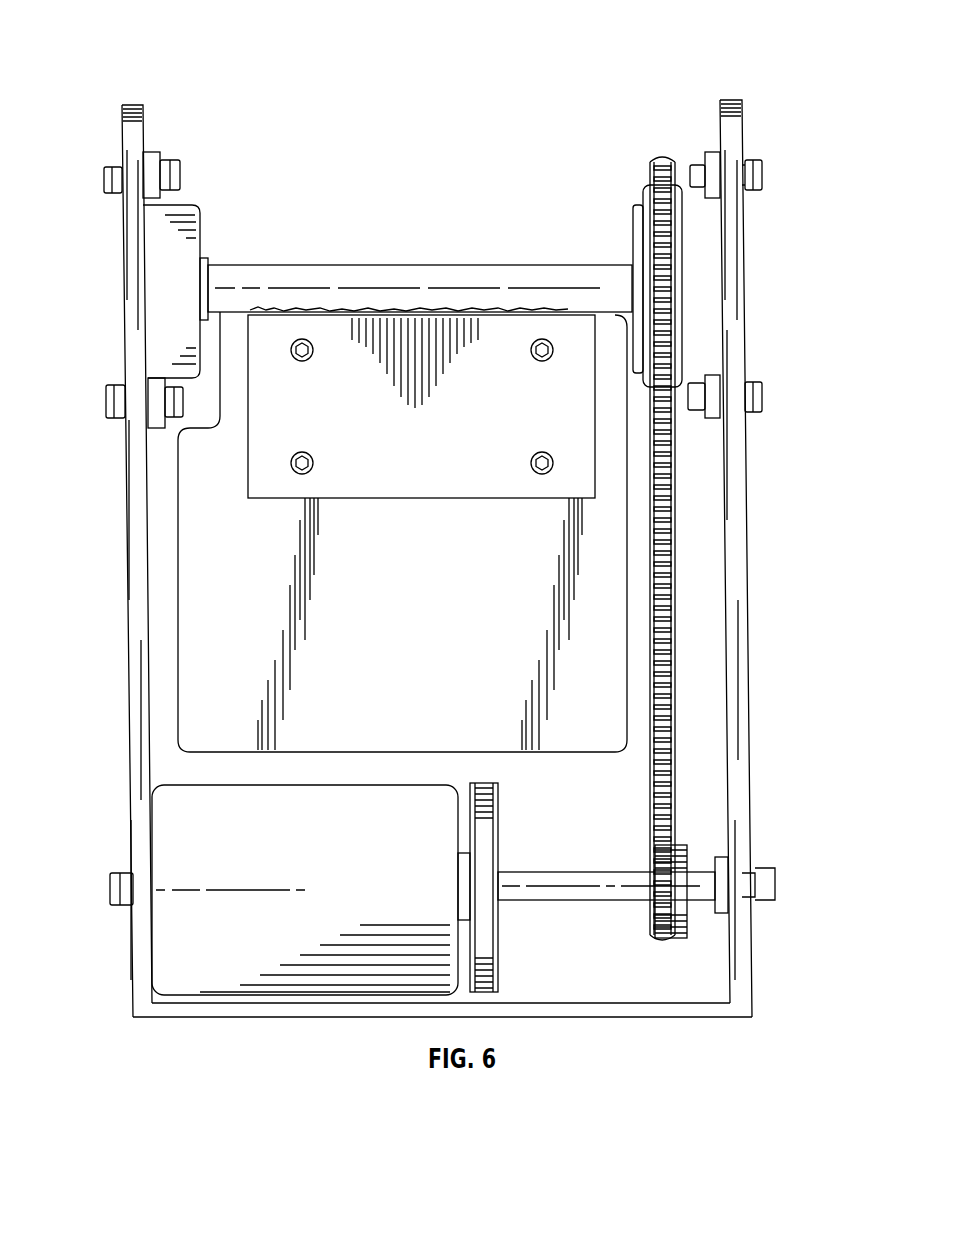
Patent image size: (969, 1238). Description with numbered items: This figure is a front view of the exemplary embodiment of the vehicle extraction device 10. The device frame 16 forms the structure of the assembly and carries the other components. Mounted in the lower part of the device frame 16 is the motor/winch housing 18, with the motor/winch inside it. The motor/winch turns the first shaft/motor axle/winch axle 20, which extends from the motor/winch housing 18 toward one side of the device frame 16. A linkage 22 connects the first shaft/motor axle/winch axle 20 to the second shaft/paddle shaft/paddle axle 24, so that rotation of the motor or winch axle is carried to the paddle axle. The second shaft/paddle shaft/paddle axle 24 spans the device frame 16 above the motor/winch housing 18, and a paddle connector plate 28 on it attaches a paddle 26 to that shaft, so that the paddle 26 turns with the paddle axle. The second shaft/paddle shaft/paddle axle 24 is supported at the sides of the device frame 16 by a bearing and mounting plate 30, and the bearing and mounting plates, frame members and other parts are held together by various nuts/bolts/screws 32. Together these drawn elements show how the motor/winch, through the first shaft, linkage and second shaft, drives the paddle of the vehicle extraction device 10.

The vehicle extraction device 10 is at (450, 160).
The device frame 16 is at (735, 325).
The motor/winch housing 18 is at (185, 867).
The first shaft/motor axle/winch axle 20 is at (590, 895).
The linkage 22 is at (652, 160).
The second shaft/paddle shaft/paddle axle 24 is at (527, 270).
The paddle 26 is at (230, 598).
The paddle connector plate 28 is at (355, 360).
The bearing and mounting plate 30 is at (165, 277).
The nuts/bolts/screws 32 is at (115, 182).